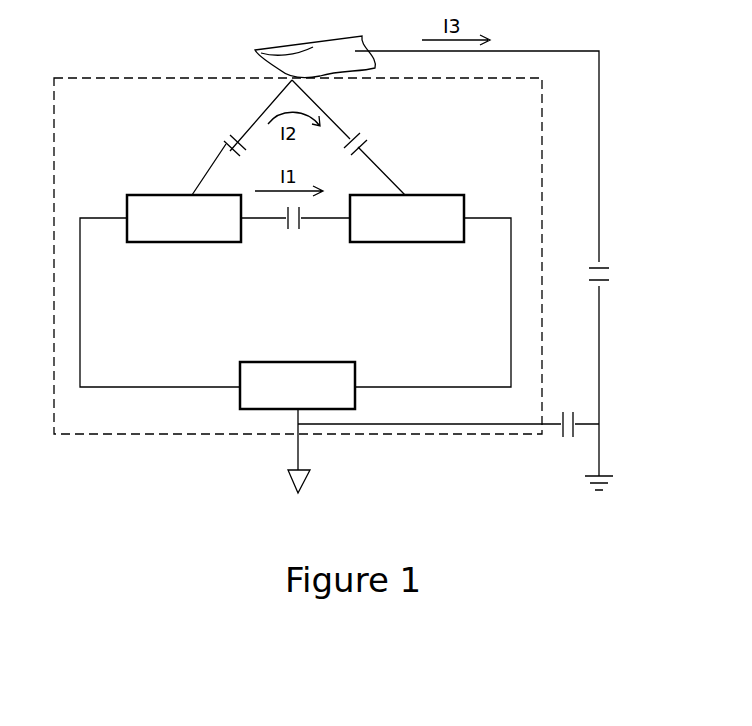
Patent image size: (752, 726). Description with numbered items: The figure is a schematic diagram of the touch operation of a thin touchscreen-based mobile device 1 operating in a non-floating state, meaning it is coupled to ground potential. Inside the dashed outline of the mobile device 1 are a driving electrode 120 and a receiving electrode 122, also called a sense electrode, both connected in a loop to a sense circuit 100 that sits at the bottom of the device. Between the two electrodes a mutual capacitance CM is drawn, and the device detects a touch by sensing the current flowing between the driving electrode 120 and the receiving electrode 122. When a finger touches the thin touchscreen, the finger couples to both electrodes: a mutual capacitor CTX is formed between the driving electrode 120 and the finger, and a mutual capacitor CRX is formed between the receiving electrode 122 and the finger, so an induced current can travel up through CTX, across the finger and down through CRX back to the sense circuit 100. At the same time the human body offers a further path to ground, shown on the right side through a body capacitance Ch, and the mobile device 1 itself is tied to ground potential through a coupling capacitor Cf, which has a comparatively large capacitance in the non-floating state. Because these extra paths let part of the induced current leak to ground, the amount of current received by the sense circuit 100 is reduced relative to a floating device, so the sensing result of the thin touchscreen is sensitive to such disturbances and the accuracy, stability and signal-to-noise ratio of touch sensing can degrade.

The thin touchscreen-based mobile device 1 is at (90, 78).
The sense circuit 100 is at (297, 385).
The driving electrode 120 is at (184, 218).
The receiving electrode 122 is at (407, 218).
The mutual capacitor CTX is at (214, 135).
The mutual capacitor CRX is at (369, 134).
The mutual capacitance CM is at (285, 232).
The human body capacitance Ch is at (614, 276).
The coupling capacitor Cf is at (561, 439).